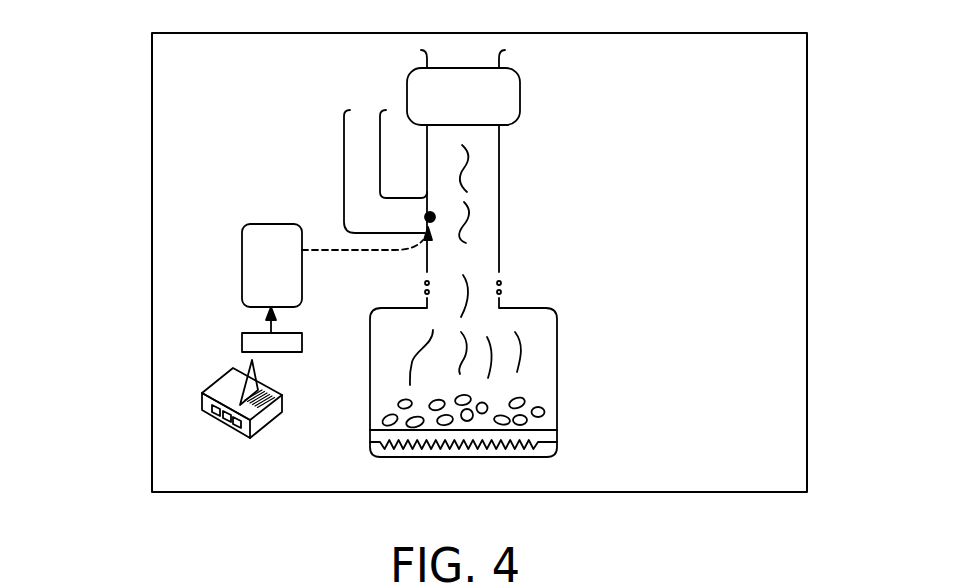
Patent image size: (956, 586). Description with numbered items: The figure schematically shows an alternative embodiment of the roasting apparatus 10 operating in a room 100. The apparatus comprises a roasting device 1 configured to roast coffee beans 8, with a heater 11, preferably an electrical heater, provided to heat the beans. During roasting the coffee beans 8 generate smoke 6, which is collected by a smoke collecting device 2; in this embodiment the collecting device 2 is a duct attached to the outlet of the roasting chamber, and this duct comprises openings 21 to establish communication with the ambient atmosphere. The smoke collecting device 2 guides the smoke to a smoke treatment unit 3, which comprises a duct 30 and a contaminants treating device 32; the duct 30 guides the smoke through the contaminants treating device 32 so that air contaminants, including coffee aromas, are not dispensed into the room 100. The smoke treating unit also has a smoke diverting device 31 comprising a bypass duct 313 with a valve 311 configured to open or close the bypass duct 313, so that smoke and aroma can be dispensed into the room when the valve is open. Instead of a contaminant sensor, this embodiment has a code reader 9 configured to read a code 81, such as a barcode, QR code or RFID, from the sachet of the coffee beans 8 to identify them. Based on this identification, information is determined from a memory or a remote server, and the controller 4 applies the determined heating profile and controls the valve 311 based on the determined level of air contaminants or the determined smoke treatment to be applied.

The room 100 is at (152, 115).
The roasting apparatus 10 is at (722, 291).
The roasting device 1 is at (504, 366).
The heater 11 is at (557, 448).
The coffee beans 8 is at (225, 422).
The code 81 is at (268, 402).
The smoke 6 is at (412, 362).
The smoke collecting device 2 is at (442, 290).
The openings 21 is at (421, 282).
The smoke treatment unit 3 is at (419, 183).
The duct 30 is at (499, 193).
The contaminants treating device 32 is at (520, 97).
The smoke diverting device 31 is at (308, 175).
The valve 311 is at (425, 217).
The bypass duct 313 is at (343, 147).
The controller 4 is at (242, 270).
The code reader 9 is at (242, 342).